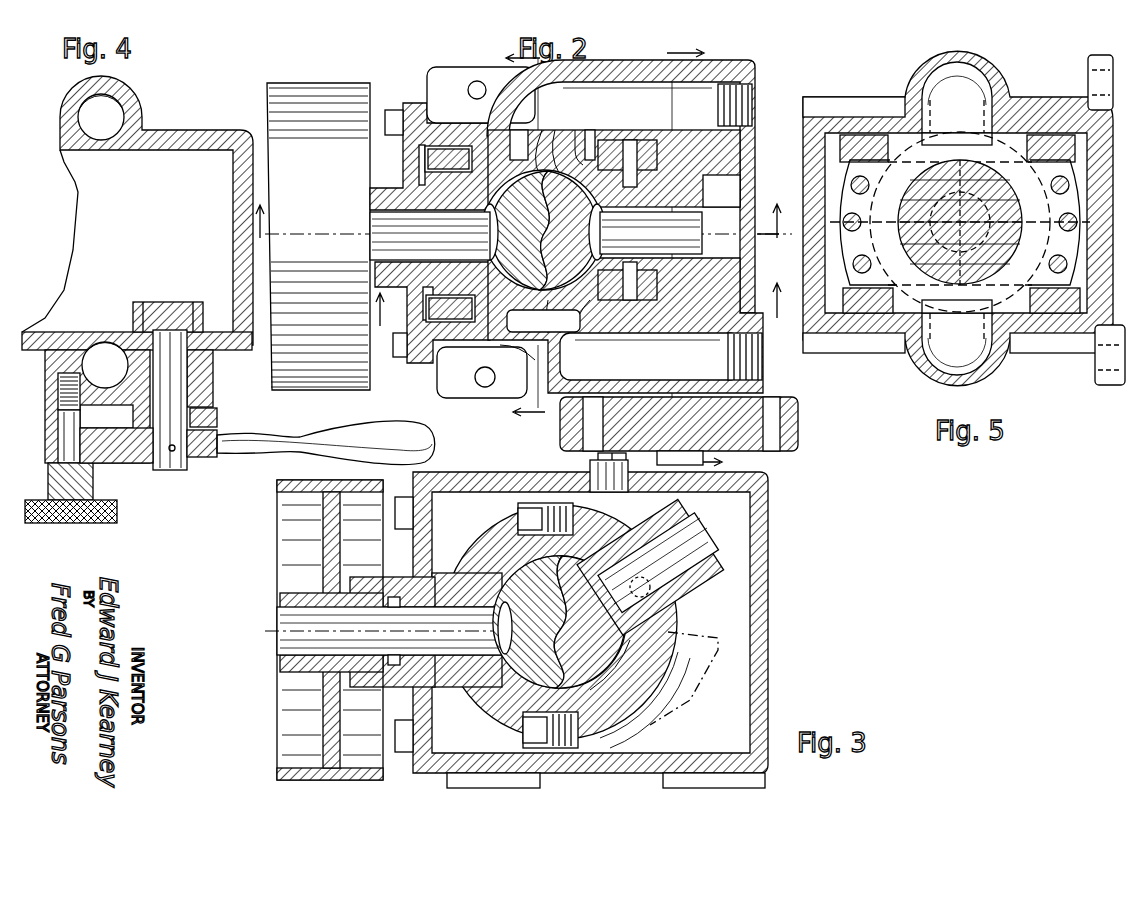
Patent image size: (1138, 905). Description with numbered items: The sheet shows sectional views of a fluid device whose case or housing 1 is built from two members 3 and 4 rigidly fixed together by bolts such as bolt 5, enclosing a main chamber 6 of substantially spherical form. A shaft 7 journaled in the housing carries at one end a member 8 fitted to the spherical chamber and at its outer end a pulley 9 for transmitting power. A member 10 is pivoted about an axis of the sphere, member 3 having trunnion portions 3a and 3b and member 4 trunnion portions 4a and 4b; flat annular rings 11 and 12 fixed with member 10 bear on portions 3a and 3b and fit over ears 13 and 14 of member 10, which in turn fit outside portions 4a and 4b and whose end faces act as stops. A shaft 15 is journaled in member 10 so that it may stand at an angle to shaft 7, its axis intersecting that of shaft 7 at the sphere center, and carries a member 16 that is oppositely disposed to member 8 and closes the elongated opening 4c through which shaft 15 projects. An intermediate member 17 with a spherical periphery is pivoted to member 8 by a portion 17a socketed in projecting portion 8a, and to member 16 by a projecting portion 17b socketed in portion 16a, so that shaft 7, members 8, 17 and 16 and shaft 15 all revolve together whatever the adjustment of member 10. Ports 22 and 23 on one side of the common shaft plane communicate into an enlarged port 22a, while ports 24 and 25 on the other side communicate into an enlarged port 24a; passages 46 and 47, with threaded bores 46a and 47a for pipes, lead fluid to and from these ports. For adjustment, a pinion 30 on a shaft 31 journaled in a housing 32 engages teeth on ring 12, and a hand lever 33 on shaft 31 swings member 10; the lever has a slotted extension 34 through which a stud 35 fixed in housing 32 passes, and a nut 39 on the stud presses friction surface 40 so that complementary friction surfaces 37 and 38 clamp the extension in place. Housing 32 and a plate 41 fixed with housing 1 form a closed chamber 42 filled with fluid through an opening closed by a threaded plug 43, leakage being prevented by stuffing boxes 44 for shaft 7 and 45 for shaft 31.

In FIG. 3, the housing 1 is at (517, 550).
In FIG. 2, the housing member 3 is at (517, 233).
In FIG. 3, the housing member 3 is at (482, 740).
In FIG. 2, the trunnion portion 3a is at (482, 372).
In FIG. 2, the trunnion portion 3b is at (482, 140).
In FIG. 2, the housing member 4 is at (692, 250).
In FIG. 5, the housing member 4 is at (960, 222).
In FIG. 3, the housing member 4 is at (622, 700).
In FIG. 2, the trunnion portion 4a is at (595, 330).
In FIG. 2, the trunnion portion 4b is at (588, 130).
In FIG. 3, the opening 4c is at (684, 678).
In FIG. 2, the bolt 5 is at (528, 240).
In FIG. 3, the bolt 5 is at (528, 740).
In FIG. 3, the main chamber 6 is at (528, 698).
In FIG. 2, the shaft 7 is at (430, 236).
In FIG. 3, the shaft 7 is at (373, 632).
In FIG. 2, the member 8 is at (578, 313).
In FIG. 3, the member 8 is at (507, 687).
In FIG. 3, the projecting portion 8a is at (500, 700).
In FIG. 2, the pulley 9 is at (300, 83).
In FIG. 3, the pulley 9 is at (285, 712).
In FIG. 2, the pivoted member 10 is at (690, 180).
In FIG. 3, the pivoted member 10 is at (688, 536).
In FIG. 2, the annular ring 11 is at (657, 160).
In FIG. 5, the annular ring 11 is at (863, 135).
In FIG. 2, the annular ring 12 is at (660, 311).
In FIG. 5, the annular ring 12 is at (885, 315).
In FIG. 2, the ear 13 is at (610, 140).
In FIG. 2, the ear 14 is at (622, 330).
In FIG. 2, the shaft 15 is at (700, 225).
In FIG. 3, the shaft 15 is at (708, 550).
In FIG. 3, the member 16 is at (625, 680).
In FIG. 2, the projecting portion 16a is at (548, 330).
In FIG. 2, the intermediate member 17 is at (543, 230).
In FIG. 5, the intermediate member 17 is at (960, 222).
In FIG. 3, the intermediate member 17 is at (595, 718).
In FIG. 3, the portion 17a is at (546, 678).
In FIG. 2, the projecting portion 17b is at (558, 132).
In FIG. 2, the port 22 is at (556, 149).
In FIG. 2, the enlarged port 22a is at (481, 94).
In FIG. 2, the port 23 is at (519, 150).
In FIG. 2, the port 24 is at (486, 366).
In FIG. 2, the enlarged port 24a is at (520, 360).
In FIG. 2, the port 25 is at (565, 330).
In FIG. 4, the pinion 30 is at (203, 312).
In FIG. 4, the shaft 31 is at (185, 366).
In FIG. 4, the housing 32 is at (240, 131).
In FIG. 2, the housing 32 is at (762, 183).
In FIG. 5, the housing 32 is at (1050, 335).
In FIG. 3, the housing 32 is at (768, 545).
In FIG. 4, the hand lever 33 is at (268, 434).
In FIG. 4, the slotted extension 34 is at (125, 458).
In FIG. 4, the stud 35 is at (50, 452).
In FIG. 4, the friction surface 37 is at (58, 392).
In FIG. 4, the friction surface 38 is at (56, 425).
In FIG. 4, the nut 39 is at (105, 522).
In FIG. 4, the friction surface 40 is at (102, 463).
In FIG. 2, the plate 41 is at (408, 103).
In FIG. 3, the plate 41 is at (420, 480).
In FIG. 4, the closed chamber 42 is at (203, 158).
In FIG. 2, the closed chamber 42 is at (722, 172).
In FIG. 3, the closed chamber 42 is at (735, 580).
In FIG. 2, the threaded plug 43 is at (679, 434).
In FIG. 3, the threaded plug 43 is at (622, 492).
In FIG. 3, the stuffing box 44 is at (395, 597).
In FIG. 4, the stuffing box 45 is at (209, 402).
In FIG. 4, the passage 46 is at (105, 350).
In FIG. 2, the passage 46 is at (723, 368).
In FIG. 5, the passage 46 is at (948, 362).
In FIG. 2, the threaded bore 46a is at (760, 342).
In FIG. 4, the passage 47 is at (118, 100).
In FIG. 2, the passage 47 is at (706, 82).
In FIG. 5, the passage 47 is at (982, 97).
In FIG. 2, the threaded bore 47a is at (752, 96).